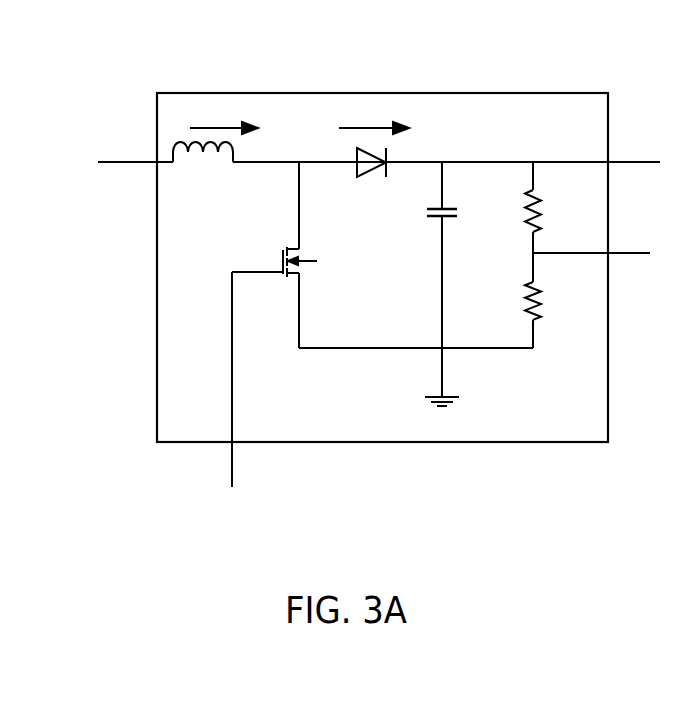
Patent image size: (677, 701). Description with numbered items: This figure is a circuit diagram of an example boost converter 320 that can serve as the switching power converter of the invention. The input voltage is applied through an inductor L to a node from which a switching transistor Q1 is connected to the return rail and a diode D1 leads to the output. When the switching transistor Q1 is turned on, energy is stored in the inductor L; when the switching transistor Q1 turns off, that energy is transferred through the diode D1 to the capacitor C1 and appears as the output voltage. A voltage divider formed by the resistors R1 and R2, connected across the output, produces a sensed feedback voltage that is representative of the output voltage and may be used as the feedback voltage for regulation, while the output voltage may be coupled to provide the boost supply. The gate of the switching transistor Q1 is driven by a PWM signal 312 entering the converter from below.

The boost converter 320 is at (372, 84).
The PWM signal 312 is at (213, 536).
The inductor L is at (203, 165).
The diode D1 is at (371, 176).
The switching transistor Q1 is at (314, 262).
The capacitor C1 is at (427, 212).
The resistor R1 is at (517, 211).
The resistor R2 is at (517, 301).